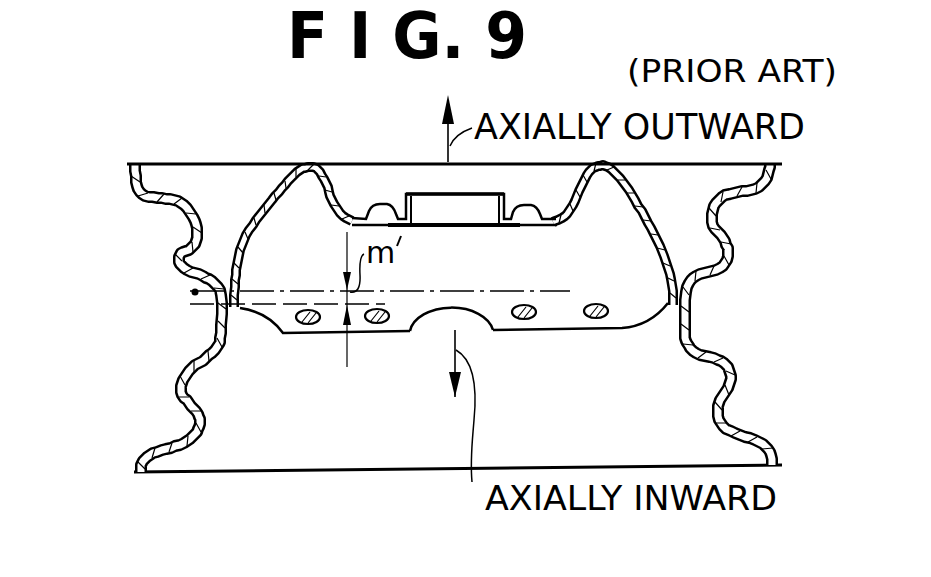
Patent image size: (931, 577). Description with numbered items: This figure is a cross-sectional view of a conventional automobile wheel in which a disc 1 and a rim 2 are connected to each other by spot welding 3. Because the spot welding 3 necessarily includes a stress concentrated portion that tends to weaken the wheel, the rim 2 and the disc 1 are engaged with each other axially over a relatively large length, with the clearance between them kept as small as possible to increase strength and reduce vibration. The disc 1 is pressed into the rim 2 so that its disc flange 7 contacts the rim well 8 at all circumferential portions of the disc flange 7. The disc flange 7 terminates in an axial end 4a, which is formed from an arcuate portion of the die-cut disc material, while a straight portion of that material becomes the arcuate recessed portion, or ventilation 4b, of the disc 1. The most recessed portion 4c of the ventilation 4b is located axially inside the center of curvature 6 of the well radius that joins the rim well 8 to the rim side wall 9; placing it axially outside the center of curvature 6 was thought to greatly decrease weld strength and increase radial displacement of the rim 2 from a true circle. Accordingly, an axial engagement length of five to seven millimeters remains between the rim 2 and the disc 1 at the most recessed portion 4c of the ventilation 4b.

The disc 1 is at (342, 160).
The rim 2 is at (127, 172).
The spot welding 3 is at (309, 324).
The axial end of the disc flange 4a is at (572, 330).
The arcuate recessed portion (ventilation) 4b is at (477, 320).
The most recessed portion of the ventilation 4c is at (450, 306).
The center of curvature of the well radius 6 is at (193, 291).
The disc flange 7 is at (245, 284).
The rim well 8 is at (217, 332).
The rim side wall 9 is at (205, 268).